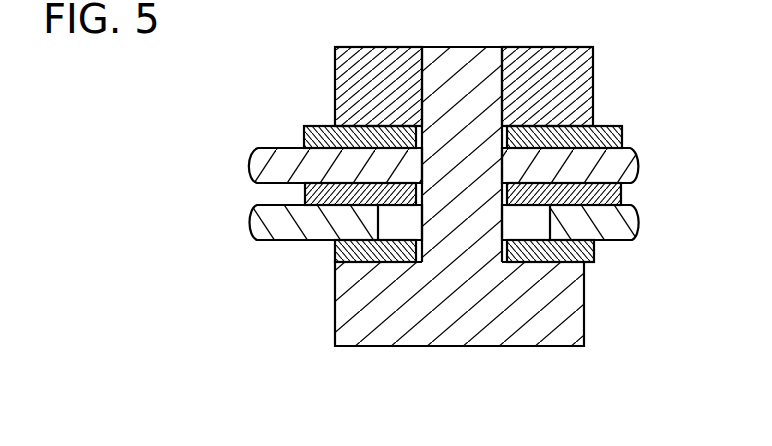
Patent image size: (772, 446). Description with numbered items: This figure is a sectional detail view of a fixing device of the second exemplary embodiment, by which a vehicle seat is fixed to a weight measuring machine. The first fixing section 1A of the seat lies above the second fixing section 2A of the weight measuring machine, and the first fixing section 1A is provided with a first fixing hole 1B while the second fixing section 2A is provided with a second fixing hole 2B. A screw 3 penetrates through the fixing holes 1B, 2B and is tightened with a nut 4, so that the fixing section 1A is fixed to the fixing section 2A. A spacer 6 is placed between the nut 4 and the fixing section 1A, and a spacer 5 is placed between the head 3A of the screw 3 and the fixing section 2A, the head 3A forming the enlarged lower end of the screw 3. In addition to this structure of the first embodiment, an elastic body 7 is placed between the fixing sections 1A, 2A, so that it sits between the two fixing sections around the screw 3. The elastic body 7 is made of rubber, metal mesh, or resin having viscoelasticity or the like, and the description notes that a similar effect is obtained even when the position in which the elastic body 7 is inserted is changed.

The first fixing section 1A is at (300, 162).
The first fixing hole 1B is at (615, 159).
The second fixing section 2A is at (295, 217).
The second fixing hole 2B is at (522, 223).
The screw 3 is at (380, 330).
The head 3A is at (568, 297).
The nut 4 is at (568, 105).
The spacer 5 is at (592, 258).
The spacer 6 is at (572, 132).
The elastic body 7 is at (622, 195).